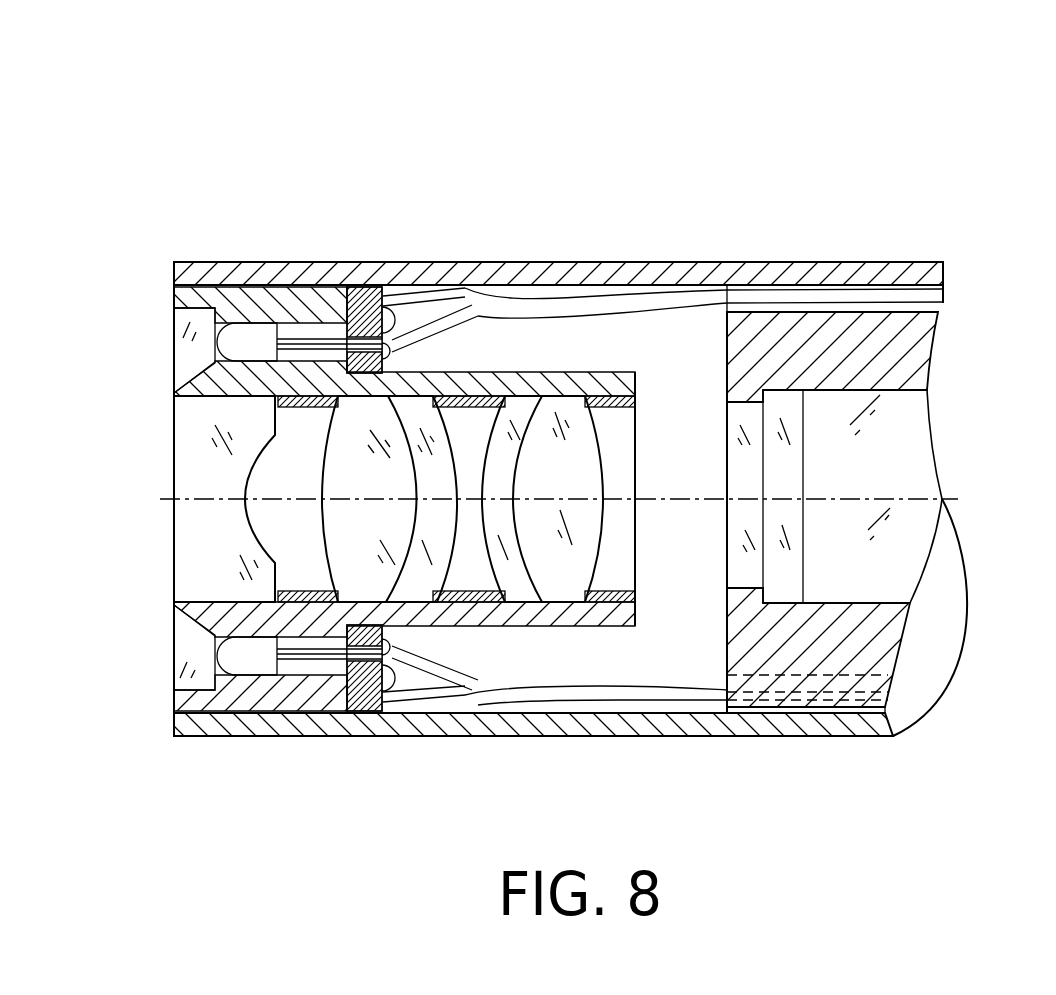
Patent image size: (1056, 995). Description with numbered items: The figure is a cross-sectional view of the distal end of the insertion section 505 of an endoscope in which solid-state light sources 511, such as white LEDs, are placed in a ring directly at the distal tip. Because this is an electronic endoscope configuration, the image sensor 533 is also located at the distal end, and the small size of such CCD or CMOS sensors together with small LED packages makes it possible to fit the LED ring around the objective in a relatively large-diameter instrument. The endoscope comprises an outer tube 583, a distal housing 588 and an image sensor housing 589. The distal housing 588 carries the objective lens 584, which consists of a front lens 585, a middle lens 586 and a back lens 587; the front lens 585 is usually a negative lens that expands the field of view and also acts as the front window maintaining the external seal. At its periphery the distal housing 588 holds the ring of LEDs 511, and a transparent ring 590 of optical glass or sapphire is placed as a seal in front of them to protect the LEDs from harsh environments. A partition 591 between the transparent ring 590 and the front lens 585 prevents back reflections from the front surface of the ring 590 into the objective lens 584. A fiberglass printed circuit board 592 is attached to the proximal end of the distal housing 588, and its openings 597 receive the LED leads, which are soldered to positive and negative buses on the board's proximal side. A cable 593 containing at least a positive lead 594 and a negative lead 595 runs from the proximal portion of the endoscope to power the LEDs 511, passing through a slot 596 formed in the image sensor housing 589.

The insertion section 505 is at (842, 130).
The solid-state light sources 511 is at (247, 328).
The image sensor 533 is at (805, 465).
The outer tube 583 is at (278, 732).
The objective lens 584 is at (110, 603).
The front lens 585 is at (170, 435).
The middle lens 586 is at (450, 427).
The back lens 587 is at (600, 434).
The distal housing 588 is at (215, 695).
The image sensor housing 589 is at (915, 350).
The transparent ring 590 is at (172, 660).
The partition 591 is at (178, 598).
The fiberglass printed circuit board 592 is at (366, 288).
The cable 593 is at (606, 290).
The positive lead 594 is at (441, 292).
The negative lead 595 is at (440, 352).
The slot 596 is at (913, 275).
The openings 597 is at (365, 700).